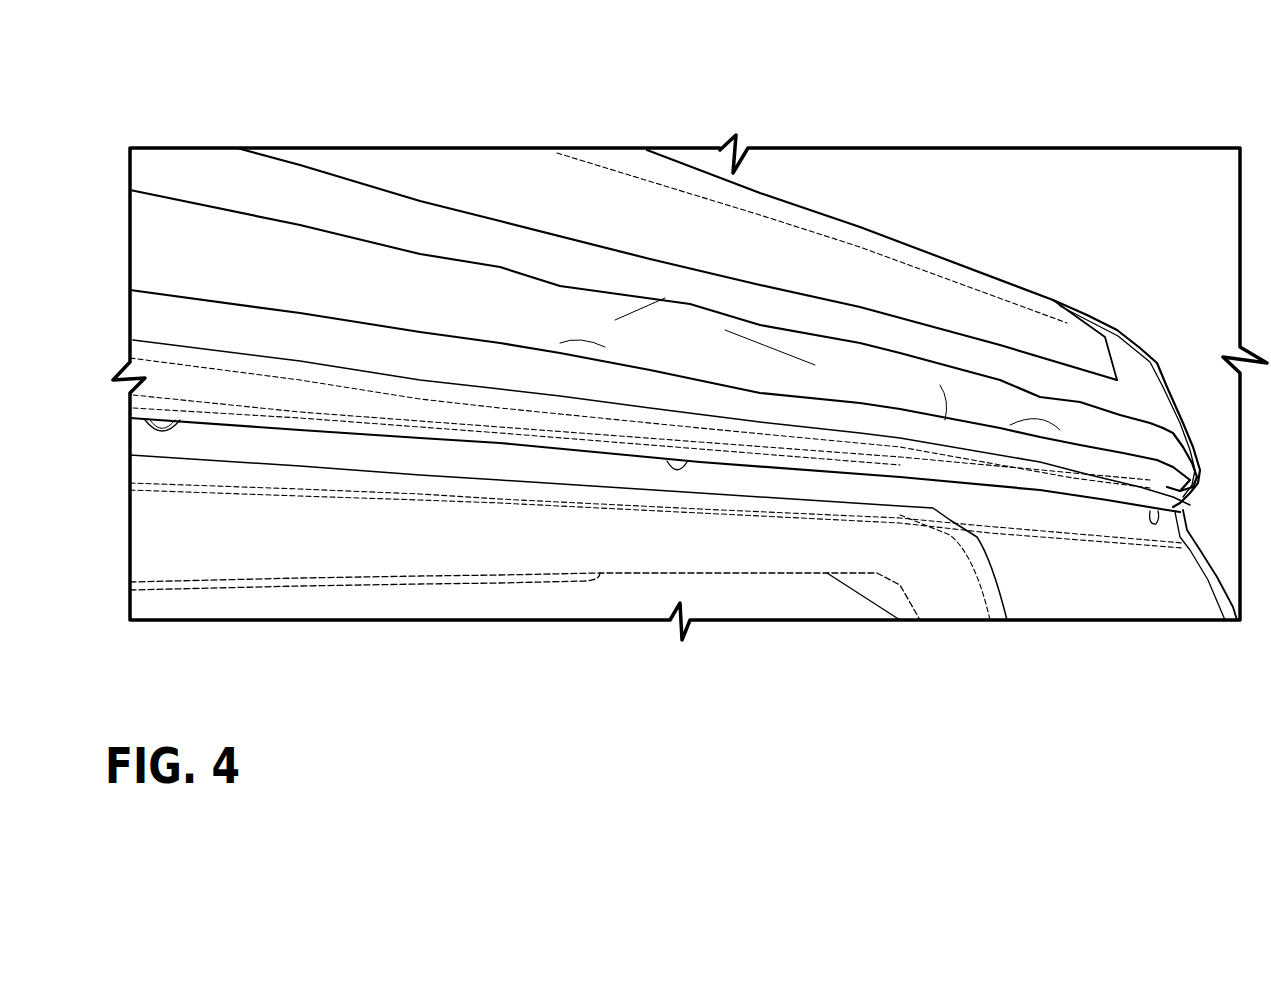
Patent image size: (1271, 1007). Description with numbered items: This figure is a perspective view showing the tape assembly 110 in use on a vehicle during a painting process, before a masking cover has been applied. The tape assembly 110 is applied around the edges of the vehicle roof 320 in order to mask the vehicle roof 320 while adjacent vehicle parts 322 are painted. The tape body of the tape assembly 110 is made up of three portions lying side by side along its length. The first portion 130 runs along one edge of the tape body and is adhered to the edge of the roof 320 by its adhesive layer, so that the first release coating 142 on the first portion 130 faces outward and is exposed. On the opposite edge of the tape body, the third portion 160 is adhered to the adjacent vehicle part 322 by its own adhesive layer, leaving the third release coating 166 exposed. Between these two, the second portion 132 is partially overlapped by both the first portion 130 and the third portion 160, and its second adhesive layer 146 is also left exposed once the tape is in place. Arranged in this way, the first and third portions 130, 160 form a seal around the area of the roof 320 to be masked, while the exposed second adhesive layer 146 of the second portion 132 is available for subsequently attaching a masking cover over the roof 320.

The tape assembly 110 is at (430, 172).
The first portion 130 is at (529, 255).
The first release coating 142 is at (713, 283).
The vehicle roof 320 is at (835, 260).
The third release coating 166 is at (428, 425).
The third portion 160 is at (515, 420).
The second portion 132 is at (622, 335).
The second adhesive layer 146 is at (738, 357).
The adjacent vehicle parts 322 is at (866, 497).